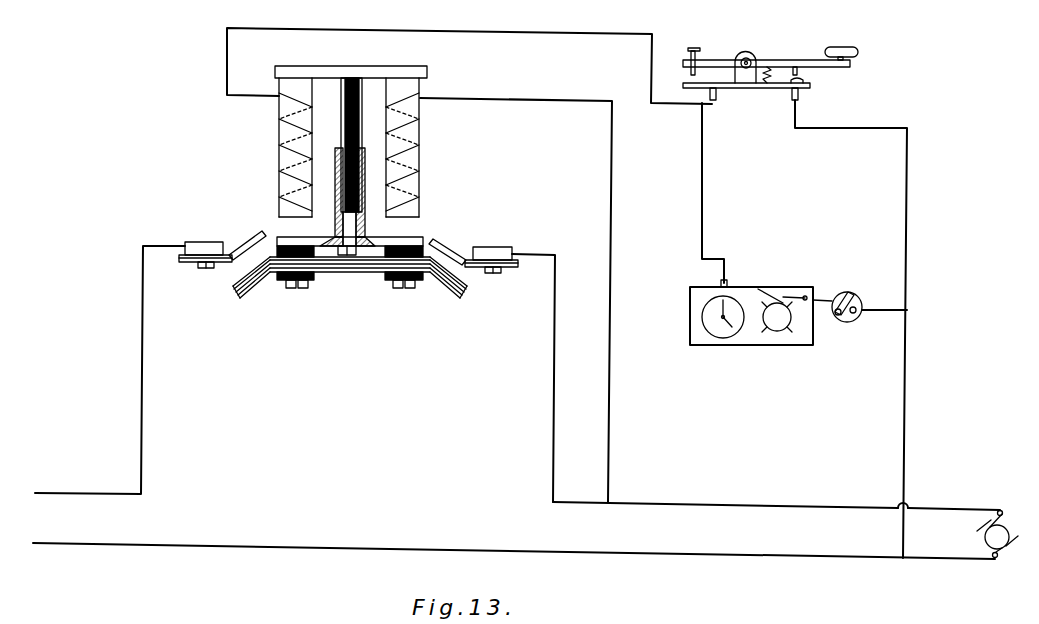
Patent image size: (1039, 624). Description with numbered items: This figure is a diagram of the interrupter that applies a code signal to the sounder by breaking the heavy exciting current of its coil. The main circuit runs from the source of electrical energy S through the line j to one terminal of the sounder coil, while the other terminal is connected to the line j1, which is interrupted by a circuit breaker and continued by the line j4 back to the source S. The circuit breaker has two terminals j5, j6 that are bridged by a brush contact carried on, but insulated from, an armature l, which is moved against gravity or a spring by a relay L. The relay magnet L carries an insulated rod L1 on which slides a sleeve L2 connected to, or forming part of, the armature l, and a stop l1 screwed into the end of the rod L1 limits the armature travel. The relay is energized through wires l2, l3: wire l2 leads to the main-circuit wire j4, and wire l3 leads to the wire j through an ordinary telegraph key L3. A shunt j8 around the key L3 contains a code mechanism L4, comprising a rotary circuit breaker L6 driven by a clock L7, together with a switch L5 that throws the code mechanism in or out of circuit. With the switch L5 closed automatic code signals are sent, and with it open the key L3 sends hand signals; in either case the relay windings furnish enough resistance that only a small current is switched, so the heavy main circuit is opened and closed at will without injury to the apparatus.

The relay L is at (359, 141).
The insulated rod L1 is at (362, 124).
The sleeve L2 is at (335, 172).
The telegraph key L3 is at (772, 38).
The code mechanism L4 is at (761, 328).
The switch L5 is at (868, 285).
The rotary circuit breaker L6 is at (777, 315).
The clock L7 is at (704, 316).
The armature l is at (415, 240).
The stop l1 is at (347, 257).
The wire l2 is at (545, 93).
The wire l3 is at (540, 32).
The line j is at (515, 329).
The line j1 is at (335, 268).
The line j4 is at (576, 397).
The terminal j5 is at (215, 267).
The terminal j6 is at (492, 370).
The shunt j8 is at (714, 195).
The source of electrical energy S is at (985, 537).